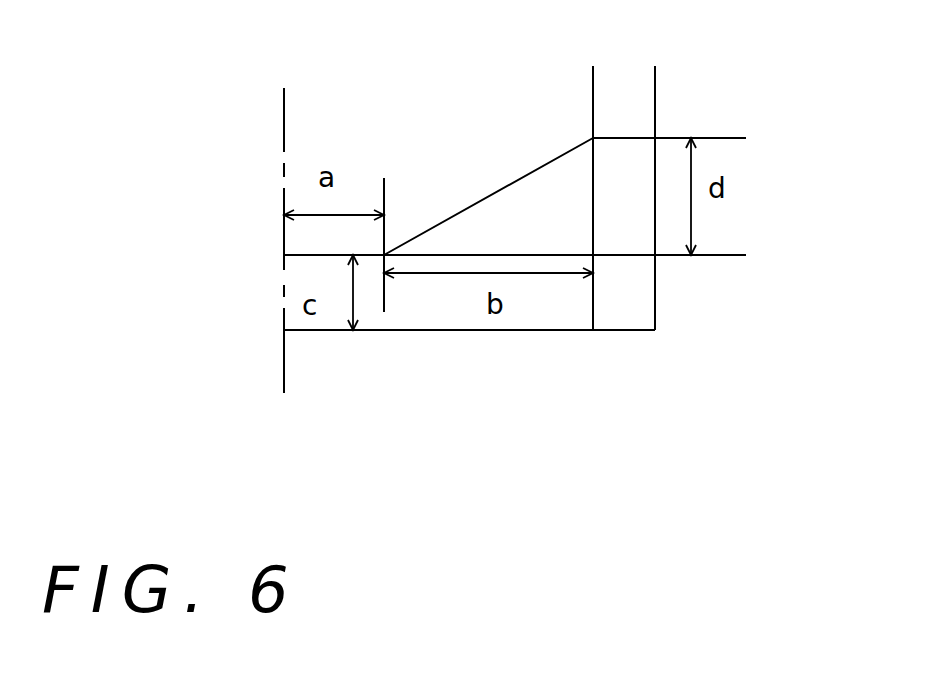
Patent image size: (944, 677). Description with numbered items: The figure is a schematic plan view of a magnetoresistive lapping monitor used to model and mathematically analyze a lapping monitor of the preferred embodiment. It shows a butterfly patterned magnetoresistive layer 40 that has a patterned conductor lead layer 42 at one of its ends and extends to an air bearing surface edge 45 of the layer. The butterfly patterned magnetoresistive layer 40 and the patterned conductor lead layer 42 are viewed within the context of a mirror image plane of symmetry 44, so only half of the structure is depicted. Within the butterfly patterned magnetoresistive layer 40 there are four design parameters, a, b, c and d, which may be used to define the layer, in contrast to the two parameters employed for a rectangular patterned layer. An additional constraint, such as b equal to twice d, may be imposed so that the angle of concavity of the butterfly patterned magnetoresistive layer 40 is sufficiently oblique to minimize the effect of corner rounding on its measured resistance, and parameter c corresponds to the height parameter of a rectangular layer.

The butterfly patterned magnetoresistive (MR) layer 40 is at (422, 307).
The patterned conductor lead layer 42 is at (643, 296).
The mirror image plane of symmetry 44 is at (280, 144).
The air bearing surface (ABS) edge 45 is at (557, 334).